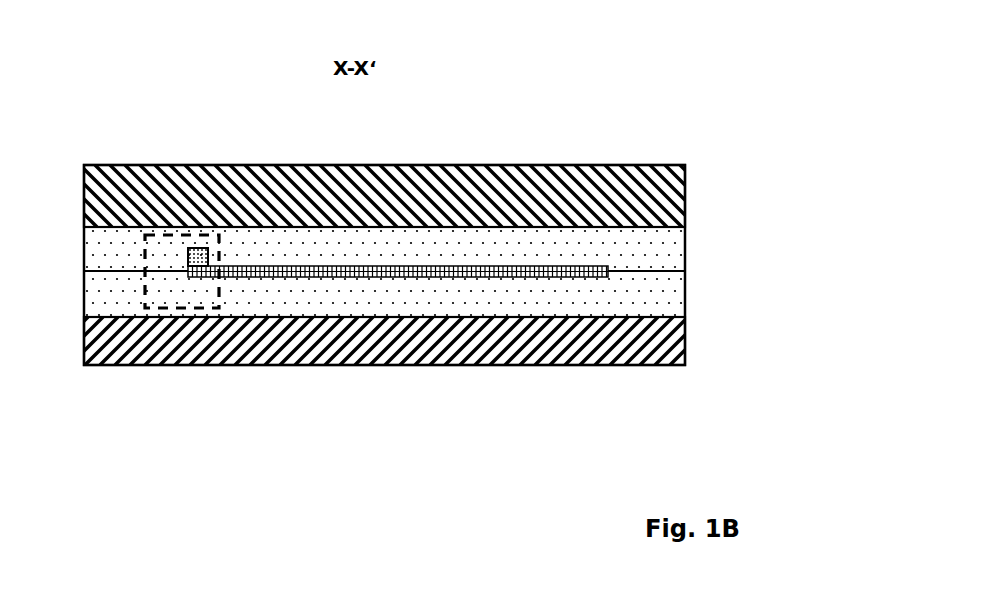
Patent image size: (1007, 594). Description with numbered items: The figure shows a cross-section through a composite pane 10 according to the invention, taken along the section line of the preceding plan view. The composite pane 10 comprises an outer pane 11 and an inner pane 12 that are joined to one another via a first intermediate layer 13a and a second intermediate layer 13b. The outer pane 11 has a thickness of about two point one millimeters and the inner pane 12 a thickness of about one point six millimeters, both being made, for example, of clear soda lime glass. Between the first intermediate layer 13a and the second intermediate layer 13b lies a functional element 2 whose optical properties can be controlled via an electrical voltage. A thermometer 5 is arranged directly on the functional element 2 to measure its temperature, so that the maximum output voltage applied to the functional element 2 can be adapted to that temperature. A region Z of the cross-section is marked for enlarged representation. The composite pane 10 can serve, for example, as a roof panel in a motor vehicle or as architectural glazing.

The composite pane 10 is at (130, 97).
The outer pane 11 is at (98, 173).
The inner pane 12 is at (163, 347).
The first intermediate layer 13a is at (662, 245).
The second intermediate layer 13b is at (672, 303).
The functional element 2 is at (453, 272).
The thermometer 5 is at (198, 250).
The region Z is at (195, 309).